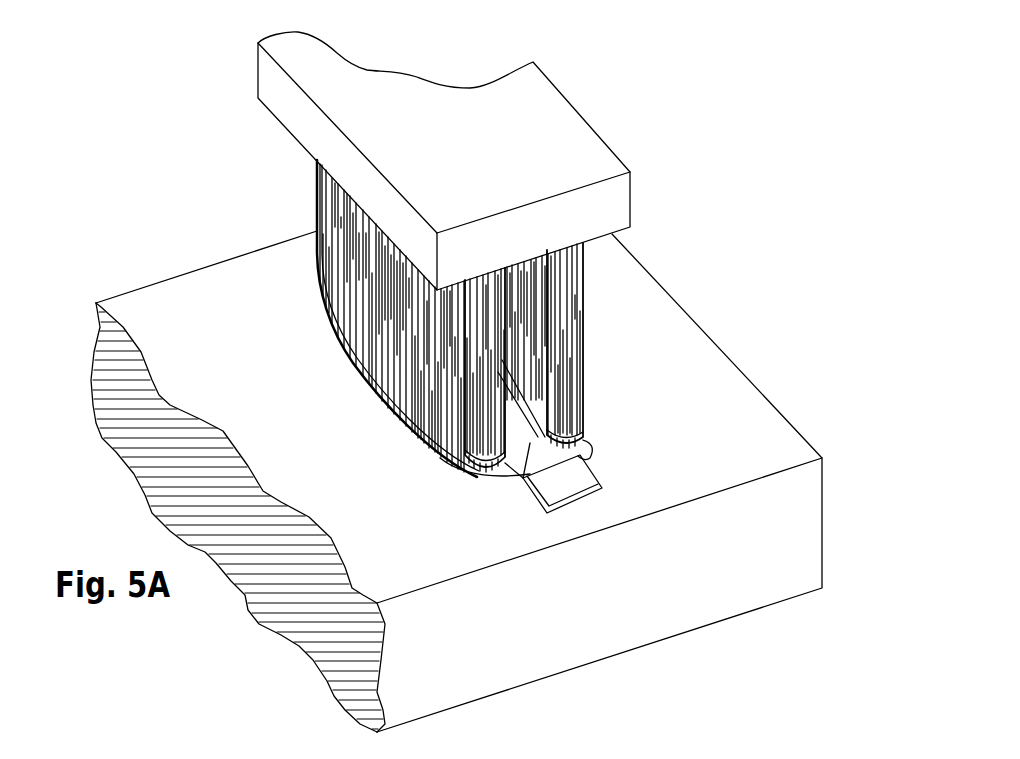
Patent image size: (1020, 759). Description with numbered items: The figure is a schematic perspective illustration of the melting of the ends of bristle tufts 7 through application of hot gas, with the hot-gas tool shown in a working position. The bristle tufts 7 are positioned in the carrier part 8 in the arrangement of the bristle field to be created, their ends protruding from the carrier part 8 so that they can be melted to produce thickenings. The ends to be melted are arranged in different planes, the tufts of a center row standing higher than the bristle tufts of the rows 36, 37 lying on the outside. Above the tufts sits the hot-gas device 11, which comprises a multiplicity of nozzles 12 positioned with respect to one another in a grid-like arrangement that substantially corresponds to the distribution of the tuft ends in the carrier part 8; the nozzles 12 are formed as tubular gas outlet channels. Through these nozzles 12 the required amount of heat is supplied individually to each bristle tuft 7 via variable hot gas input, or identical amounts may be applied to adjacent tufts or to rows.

The hot-gas device 11 is at (613, 117).
The nozzles 12 is at (470, 410).
The bristle tufts 7 is at (484, 478).
The row of bristle tufts 36 is at (503, 477).
The row of bristle tufts 37 is at (583, 452).
The carrier part 8 is at (632, 608).